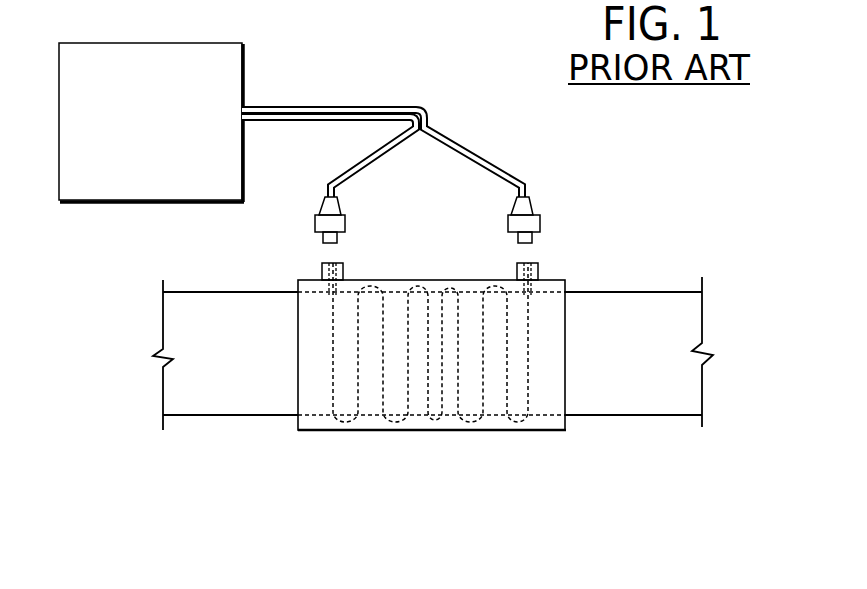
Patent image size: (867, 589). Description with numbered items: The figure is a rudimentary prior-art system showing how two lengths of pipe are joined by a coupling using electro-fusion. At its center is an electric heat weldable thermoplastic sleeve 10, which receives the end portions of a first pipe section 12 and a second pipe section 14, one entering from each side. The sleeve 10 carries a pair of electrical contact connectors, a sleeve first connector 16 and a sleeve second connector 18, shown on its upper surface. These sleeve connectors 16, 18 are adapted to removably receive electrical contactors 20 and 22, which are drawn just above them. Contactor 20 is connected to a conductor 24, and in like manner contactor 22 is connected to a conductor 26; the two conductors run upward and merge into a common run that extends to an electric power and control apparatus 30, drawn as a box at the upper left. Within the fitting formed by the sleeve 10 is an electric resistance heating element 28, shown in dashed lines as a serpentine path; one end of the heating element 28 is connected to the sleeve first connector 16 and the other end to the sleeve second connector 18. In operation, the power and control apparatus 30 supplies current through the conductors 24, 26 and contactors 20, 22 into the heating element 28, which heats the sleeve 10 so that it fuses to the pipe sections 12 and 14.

The electric heat weldable thermoplastic sleeve 10 is at (571, 279).
The first pipe section 12 is at (660, 298).
The second pipe section 14 is at (241, 308).
The sleeve first connector 16 is at (349, 262).
The sleeve second connector 18 is at (543, 261).
The electrical contactor 20 is at (353, 214).
The electrical contactor 22 is at (544, 209).
The conductor 24 is at (372, 160).
The conductor 26 is at (451, 149).
The electric resistance heating element 28 is at (388, 328).
The electric power and control apparatus 30 is at (247, 66).